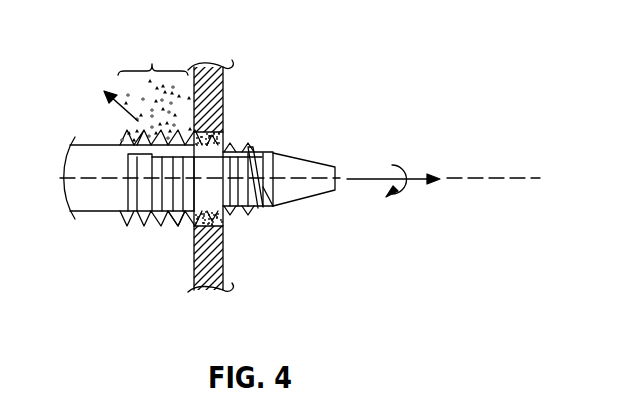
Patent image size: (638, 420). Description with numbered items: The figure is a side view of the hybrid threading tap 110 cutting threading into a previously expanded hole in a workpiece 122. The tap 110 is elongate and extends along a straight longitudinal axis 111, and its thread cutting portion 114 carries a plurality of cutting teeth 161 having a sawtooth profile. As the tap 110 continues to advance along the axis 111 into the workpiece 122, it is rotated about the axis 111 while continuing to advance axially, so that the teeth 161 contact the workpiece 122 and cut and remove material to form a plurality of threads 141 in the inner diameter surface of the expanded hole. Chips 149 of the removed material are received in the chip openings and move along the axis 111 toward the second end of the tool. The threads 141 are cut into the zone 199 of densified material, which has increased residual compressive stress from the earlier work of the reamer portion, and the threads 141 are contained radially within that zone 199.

The hybrid threading tap 110 is at (87, 212).
The longitudinal axis 111 is at (505, 178).
The thread cutting portion 114 is at (160, 218).
The workpiece 122 is at (223, 77).
The threads 141 is at (178, 214).
The chips 149 is at (152, 63).
The cutting teeth 161 is at (180, 212).
The zone 199 is at (224, 222).